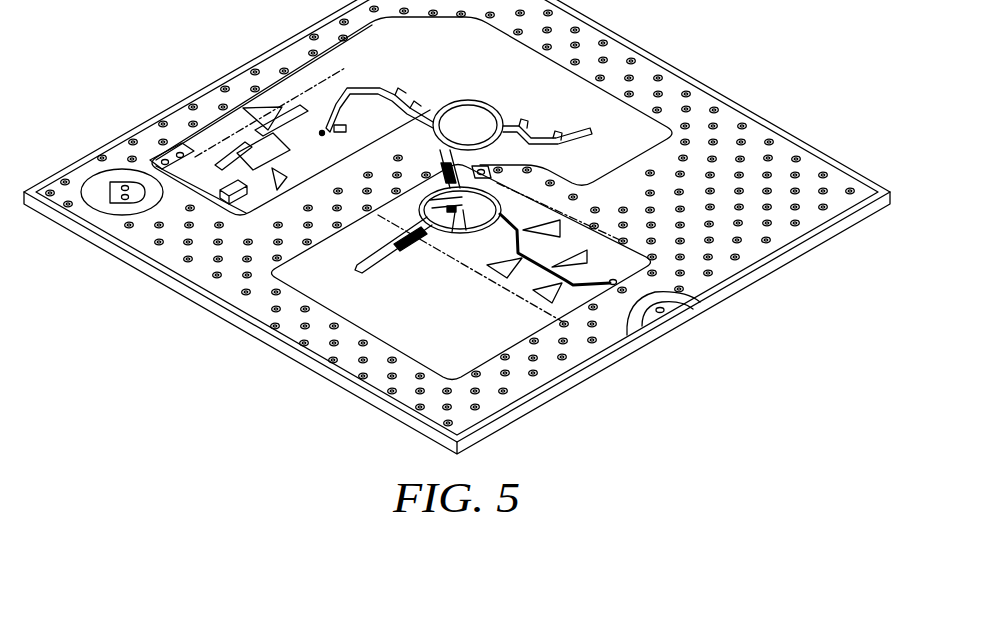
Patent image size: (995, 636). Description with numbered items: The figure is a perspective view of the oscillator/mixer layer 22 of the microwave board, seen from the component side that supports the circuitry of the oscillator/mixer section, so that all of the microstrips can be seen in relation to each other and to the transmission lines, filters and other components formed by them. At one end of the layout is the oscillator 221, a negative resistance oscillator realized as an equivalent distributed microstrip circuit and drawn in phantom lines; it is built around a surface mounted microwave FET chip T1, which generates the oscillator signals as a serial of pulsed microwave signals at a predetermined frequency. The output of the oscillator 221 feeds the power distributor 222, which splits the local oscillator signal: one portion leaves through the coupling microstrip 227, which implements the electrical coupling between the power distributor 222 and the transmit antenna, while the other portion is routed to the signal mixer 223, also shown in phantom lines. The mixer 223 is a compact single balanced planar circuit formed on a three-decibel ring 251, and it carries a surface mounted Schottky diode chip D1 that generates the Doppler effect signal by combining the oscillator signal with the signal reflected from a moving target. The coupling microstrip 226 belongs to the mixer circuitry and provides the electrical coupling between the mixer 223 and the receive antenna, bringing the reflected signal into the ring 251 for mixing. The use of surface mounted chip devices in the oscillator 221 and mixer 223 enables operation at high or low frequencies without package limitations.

The oscillator/mixer layer 22 is at (120, 82).
The oscillator 221 is at (248, 100).
The surface mounted microwave FET chip T1 is at (324, 132).
The power distributor 222 is at (488, 110).
The coupling microstrip 227 is at (593, 132).
The 3 dB ring 251 is at (468, 232).
The coupling microstrip 226 is at (362, 270).
The surface mounted diode chip D1 is at (398, 236).
The signal mixer 223 is at (617, 324).